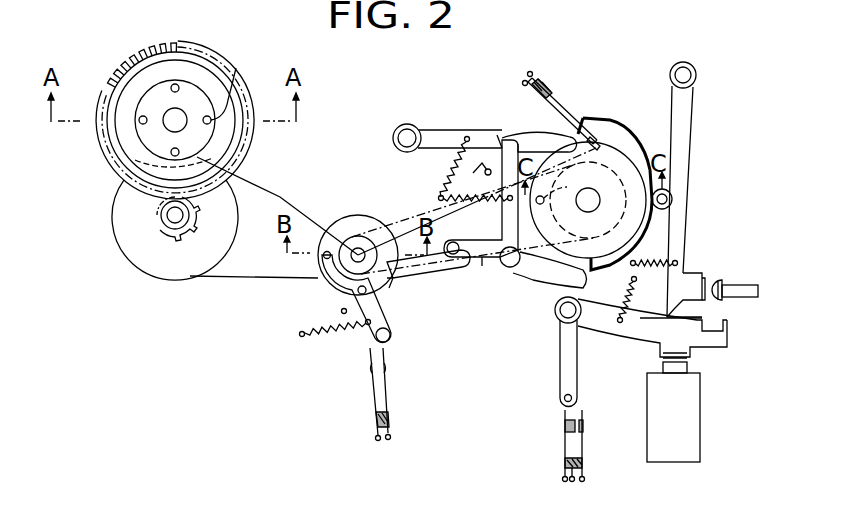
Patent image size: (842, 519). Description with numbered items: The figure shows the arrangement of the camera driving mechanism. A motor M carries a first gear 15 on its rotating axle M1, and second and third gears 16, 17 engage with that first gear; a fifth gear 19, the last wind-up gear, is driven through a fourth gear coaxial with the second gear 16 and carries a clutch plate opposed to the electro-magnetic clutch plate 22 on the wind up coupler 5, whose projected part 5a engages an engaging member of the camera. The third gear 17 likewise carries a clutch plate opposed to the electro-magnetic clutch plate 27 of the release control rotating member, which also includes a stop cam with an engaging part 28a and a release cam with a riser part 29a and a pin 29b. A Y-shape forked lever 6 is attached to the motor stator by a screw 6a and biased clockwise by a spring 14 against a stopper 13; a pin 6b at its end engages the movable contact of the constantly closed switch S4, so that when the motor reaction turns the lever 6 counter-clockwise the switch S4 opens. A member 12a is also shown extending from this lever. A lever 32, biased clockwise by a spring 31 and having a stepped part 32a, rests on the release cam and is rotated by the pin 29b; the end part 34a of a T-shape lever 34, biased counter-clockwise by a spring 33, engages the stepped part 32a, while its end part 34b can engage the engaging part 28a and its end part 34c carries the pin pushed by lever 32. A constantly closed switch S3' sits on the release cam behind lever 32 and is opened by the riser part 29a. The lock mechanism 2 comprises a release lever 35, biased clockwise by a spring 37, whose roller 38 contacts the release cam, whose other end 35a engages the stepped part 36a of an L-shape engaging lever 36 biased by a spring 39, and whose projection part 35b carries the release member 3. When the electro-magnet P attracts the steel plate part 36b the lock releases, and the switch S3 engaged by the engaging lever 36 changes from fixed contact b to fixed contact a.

The fifth gear 19 is at (110, 166).
The wind up coupler 5 is at (140, 112).
The projected part 5a is at (179, 88).
The electro-magnetic clutch plate 22 is at (237, 97).
The second gear 16 is at (112, 225).
The lock mechanism 2 is at (235, 278).
The motor M is at (362, 219).
The rotating axle M1 is at (352, 251).
The first gear 15 is at (324, 226).
The Y-shape forked lever 6 is at (327, 286).
The screw 6a is at (317, 257).
The pin 6b is at (373, 338).
The stopper 13 is at (342, 311).
The spring 14 is at (322, 337).
The link bar 12a is at (405, 280).
The switch S4 is at (368, 394).
The lever 32 is at (482, 138).
The stepped part 32a is at (502, 140).
The spring 31 is at (445, 170).
The spring 33 is at (477, 203).
The T-shape lever 34 is at (525, 290).
The end part 34a is at (525, 123).
The end part 34b is at (570, 282).
The end part 34c is at (487, 275).
The switch S3' is at (562, 99).
The pin 29b is at (603, 119).
The riser part 29a is at (588, 200).
The engaging part 28a is at (609, 270).
The release lever 35 is at (680, 117).
The roller 38 is at (672, 201).
The projection part 35b is at (688, 273).
The release member 3 is at (745, 281).
The third gear 17 is at (654, 249).
The spring 37 is at (642, 300).
The spring 39 is at (637, 320).
The other end 35a is at (678, 306).
The engaging lever 36 is at (560, 369).
The steel plate part 36b is at (660, 355).
The stepped part 36a is at (706, 363).
The electro-magnet P is at (673, 417).
The electro-magnetic clutch plate 27 is at (562, 400).
The switch S3 is at (587, 448).
The fixed contact side a is at (559, 428).
The fixed contact side b is at (590, 428).